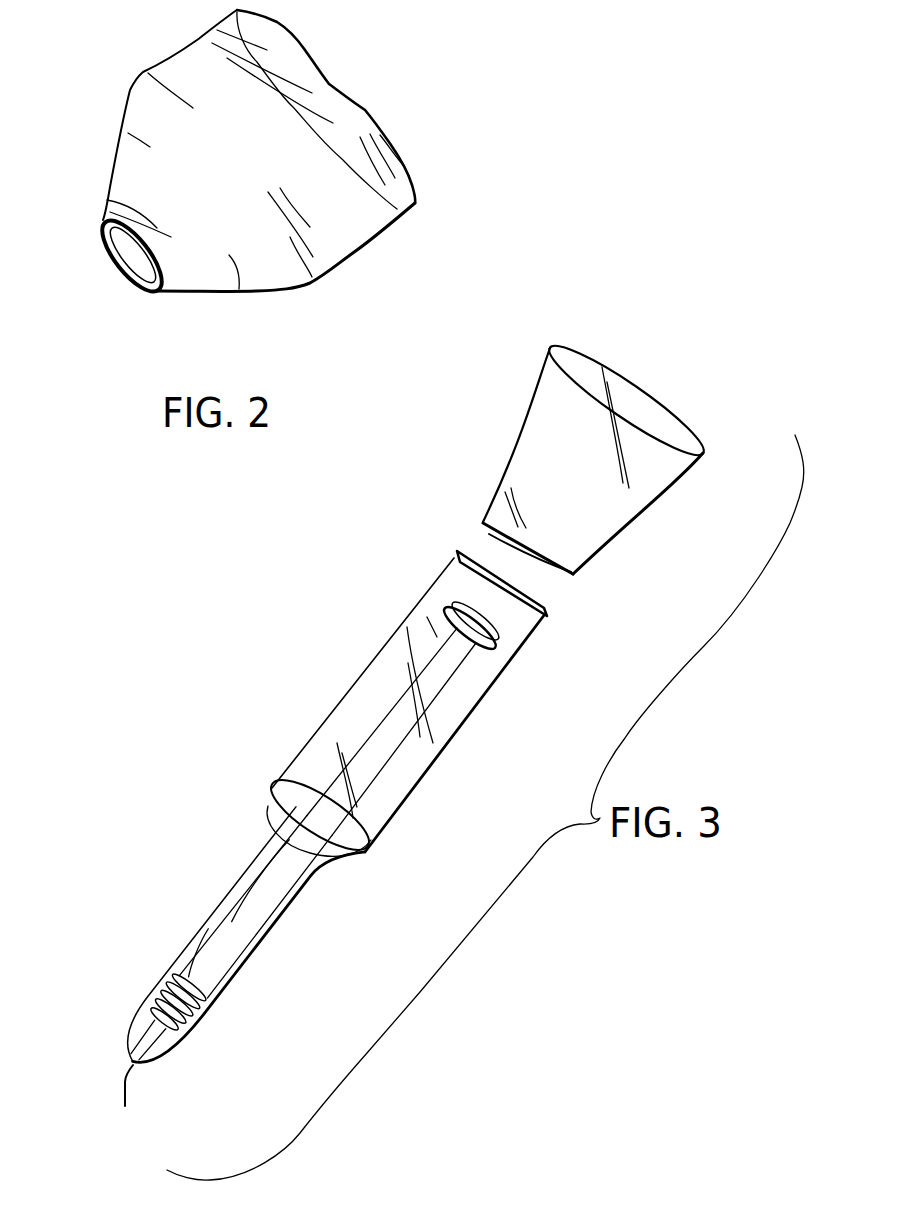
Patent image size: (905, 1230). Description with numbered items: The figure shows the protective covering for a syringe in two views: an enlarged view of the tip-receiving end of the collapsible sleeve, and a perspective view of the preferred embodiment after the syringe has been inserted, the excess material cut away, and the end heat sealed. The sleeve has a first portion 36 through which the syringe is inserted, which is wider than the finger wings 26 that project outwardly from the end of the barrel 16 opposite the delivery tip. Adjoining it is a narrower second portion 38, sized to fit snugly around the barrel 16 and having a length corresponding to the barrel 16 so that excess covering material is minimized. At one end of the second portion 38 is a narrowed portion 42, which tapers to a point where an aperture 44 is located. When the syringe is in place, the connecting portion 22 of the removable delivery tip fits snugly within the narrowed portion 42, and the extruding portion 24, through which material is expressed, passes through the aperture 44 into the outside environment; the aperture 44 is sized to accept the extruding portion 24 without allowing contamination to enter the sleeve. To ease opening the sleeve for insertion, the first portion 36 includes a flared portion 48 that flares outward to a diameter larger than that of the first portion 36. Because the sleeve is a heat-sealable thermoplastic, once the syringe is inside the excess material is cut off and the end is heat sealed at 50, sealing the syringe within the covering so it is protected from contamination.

In FIG. 3, the barrel 16 is at (218, 937).
In FIG. 3, the connecting portion 22 is at (135, 1022).
In FIG. 3, the extruding portion 24 is at (132, 1087).
In FIG. 3, the finger wings 26 is at (367, 822).
In FIG. 3, the first portion 36 is at (477, 708).
In FIG. 2, the second portion 38 is at (390, 223).
In FIG. 3, the second portion 38 is at (267, 930).
In FIG. 2, the narrowed portion 42 is at (259, 292).
In FIG. 2, the aperture 44 is at (121, 262).
In FIG. 3, the flared portion 48 is at (653, 496).
In FIG. 3, the heat seal 50 is at (532, 585).